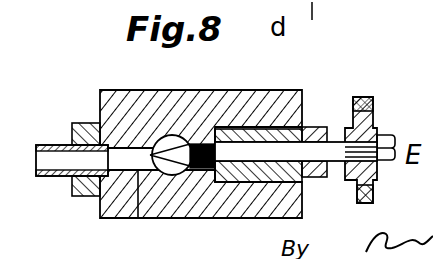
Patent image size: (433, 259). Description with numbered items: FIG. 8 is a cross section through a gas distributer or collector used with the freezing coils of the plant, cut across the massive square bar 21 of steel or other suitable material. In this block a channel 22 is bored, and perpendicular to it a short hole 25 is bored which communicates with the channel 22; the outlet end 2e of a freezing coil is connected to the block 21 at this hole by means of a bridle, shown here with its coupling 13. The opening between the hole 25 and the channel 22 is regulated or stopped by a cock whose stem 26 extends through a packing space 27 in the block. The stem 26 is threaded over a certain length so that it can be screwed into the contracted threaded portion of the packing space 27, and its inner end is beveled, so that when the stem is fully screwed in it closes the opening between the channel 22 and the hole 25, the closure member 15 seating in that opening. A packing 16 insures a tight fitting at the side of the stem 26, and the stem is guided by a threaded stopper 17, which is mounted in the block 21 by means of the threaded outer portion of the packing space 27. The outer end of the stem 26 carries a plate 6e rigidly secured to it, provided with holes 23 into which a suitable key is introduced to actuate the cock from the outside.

The outlet end of freezing coil 2e is at (52, 158).
The coupling nut 13 is at (82, 123).
The massive square bar 21 is at (138, 98).
The channel 22 is at (175, 142).
The valve plug 15 is at (213, 142).
The packing space 27 is at (252, 142).
The stem 26 is at (328, 148).
The hub 6e is at (362, 98).
The hole 23 is at (374, 104).
The short hole 25 is at (138, 218).
The packing 16 is at (256, 182).
The threaded stopper 17 is at (310, 178).